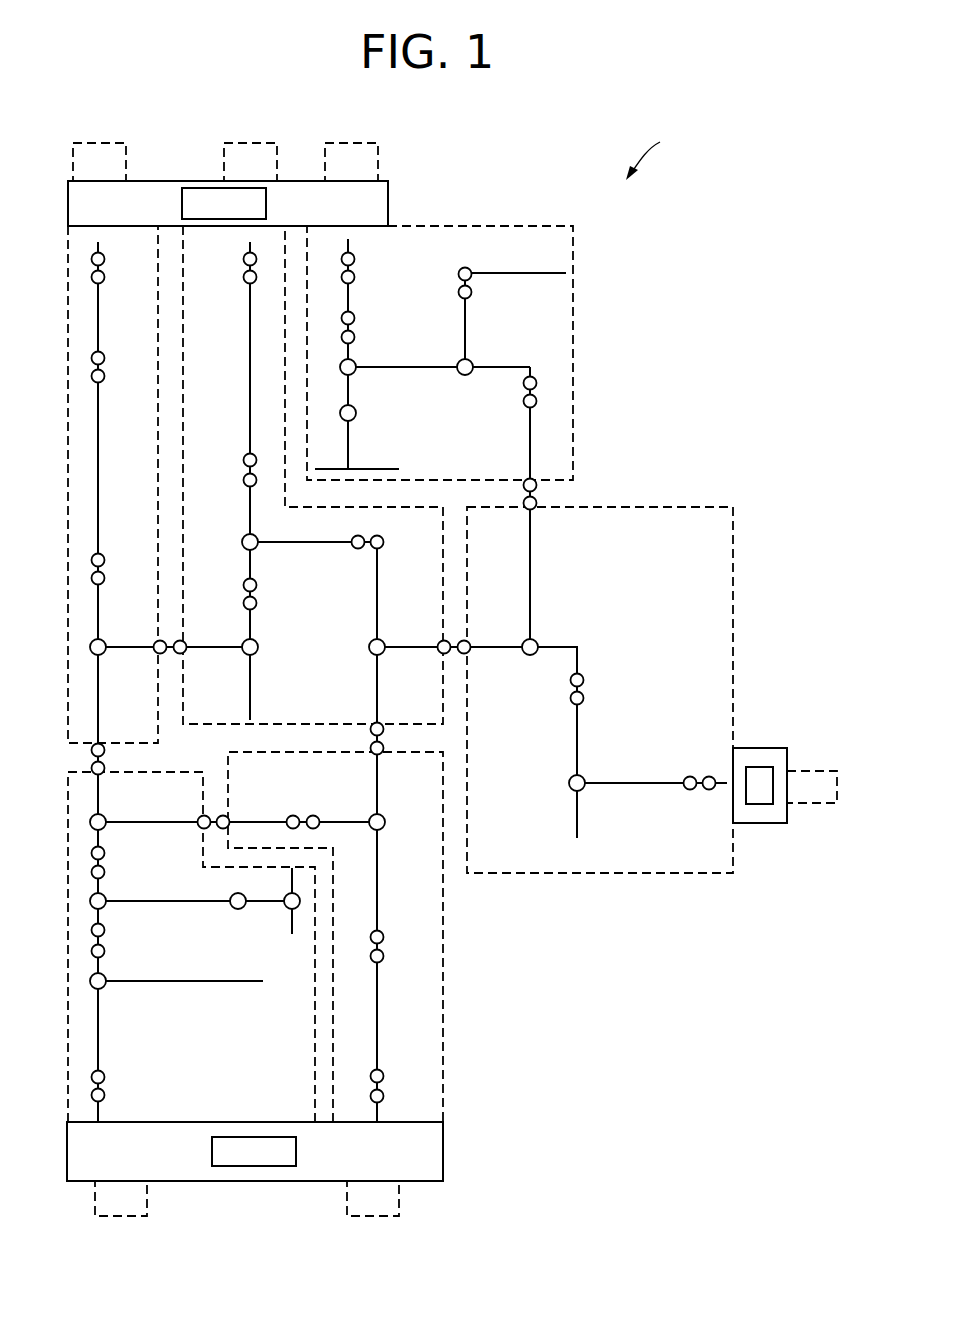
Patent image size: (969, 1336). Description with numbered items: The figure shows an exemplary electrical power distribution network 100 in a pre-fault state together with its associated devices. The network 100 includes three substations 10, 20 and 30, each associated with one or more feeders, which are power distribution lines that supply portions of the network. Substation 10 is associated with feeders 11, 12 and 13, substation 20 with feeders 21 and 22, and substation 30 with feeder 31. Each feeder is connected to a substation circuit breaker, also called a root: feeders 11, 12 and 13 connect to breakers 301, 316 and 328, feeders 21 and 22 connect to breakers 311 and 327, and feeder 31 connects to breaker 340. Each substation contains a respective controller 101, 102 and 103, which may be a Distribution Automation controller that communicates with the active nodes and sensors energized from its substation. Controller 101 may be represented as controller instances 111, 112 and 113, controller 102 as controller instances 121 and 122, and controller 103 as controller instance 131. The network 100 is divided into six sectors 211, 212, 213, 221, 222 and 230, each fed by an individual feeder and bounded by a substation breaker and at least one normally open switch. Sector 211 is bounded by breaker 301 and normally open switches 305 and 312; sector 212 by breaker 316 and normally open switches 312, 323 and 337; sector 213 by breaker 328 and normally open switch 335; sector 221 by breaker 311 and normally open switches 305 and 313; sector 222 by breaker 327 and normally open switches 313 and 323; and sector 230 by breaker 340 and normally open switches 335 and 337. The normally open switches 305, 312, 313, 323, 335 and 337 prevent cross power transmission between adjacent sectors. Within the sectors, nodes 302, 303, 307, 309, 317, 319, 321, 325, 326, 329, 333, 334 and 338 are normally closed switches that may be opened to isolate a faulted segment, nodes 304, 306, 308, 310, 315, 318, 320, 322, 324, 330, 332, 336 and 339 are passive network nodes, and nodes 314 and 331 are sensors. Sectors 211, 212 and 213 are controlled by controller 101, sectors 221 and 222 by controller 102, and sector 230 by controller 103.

The power distribution network 100 is at (666, 151).
The substation 10 is at (68, 198).
The controller 101 is at (266, 203).
The controller instance 111 is at (126, 152).
The controller instance 112 is at (277, 152).
The controller instance 113 is at (378, 152).
The substation 20 is at (443, 1152).
The controller 102 is at (296, 1150).
The controller instance 121 is at (147, 1198).
The controller instance 122 is at (399, 1198).
The substation 30 is at (758, 748).
The controller 103 is at (760, 804).
The controller instance 131 is at (812, 803).
The sector 211 is at (68, 250).
The sector 212 is at (285, 723).
The sector 213 is at (573, 285).
The sector 221 is at (68, 1085).
The sector 222 is at (443, 1022).
The sector 230 is at (688, 507).
The feeder 11 is at (100, 245).
The feeder 12 is at (248, 245).
The feeder 13 is at (350, 245).
The feeder 21 is at (100, 1108).
The feeder 22 is at (380, 1110).
The feeder 31 is at (727, 783).
The substation circuit breaker 301 is at (104, 276).
The normally closed switch 302 is at (92, 357).
The normally closed switch 303 is at (104, 558).
The passive network node 304 is at (104, 641).
The normally open switch 305 is at (92, 761).
The passive network node 306 is at (104, 817).
The normally closed switch 307 is at (92, 866).
The passive network node 308 is at (90, 900).
The normally closed switch 309 is at (104, 940).
The passive network node 310 is at (104, 986).
The substation circuit breaker 311 is at (104, 1080).
The normally open switch 312 is at (168, 652).
The normally open switch 313 is at (212, 828).
The sensor 314 is at (232, 906).
The passive network node 315 is at (288, 908).
The substation circuit breaker 316 is at (244, 276).
The normally closed switch 317 is at (244, 465).
The passive network node 318 is at (244, 537).
The normally closed switch 319 is at (244, 590).
The passive network node 320 is at (256, 642).
The normally closed switch 321 is at (382, 536).
The passive network node 322 is at (384, 652).
The normally open switch 323 is at (371, 740).
The passive network node 324 is at (384, 827).
The normally closed switch 325 is at (300, 816).
The normally closed switch 326 is at (383, 940).
The substation circuit breaker 327 is at (383, 1078).
The substation circuit breaker 328 is at (354, 276).
The normally closed switch 329 is at (354, 335).
The passive network node 330 is at (356, 372).
The sensor 331 is at (356, 418).
The passive network node 332 is at (472, 362).
The normally closed switch 333 is at (458, 276).
The normally closed switch 334 is at (523, 395).
The normally open switch 335 is at (536, 496).
The passive network node 336 is at (536, 641).
The normally open switch 337 is at (450, 652).
The normally closed switch 338 is at (583, 690).
The passive network node 339 is at (570, 788).
The substation circuit breaker 340 is at (697, 790).